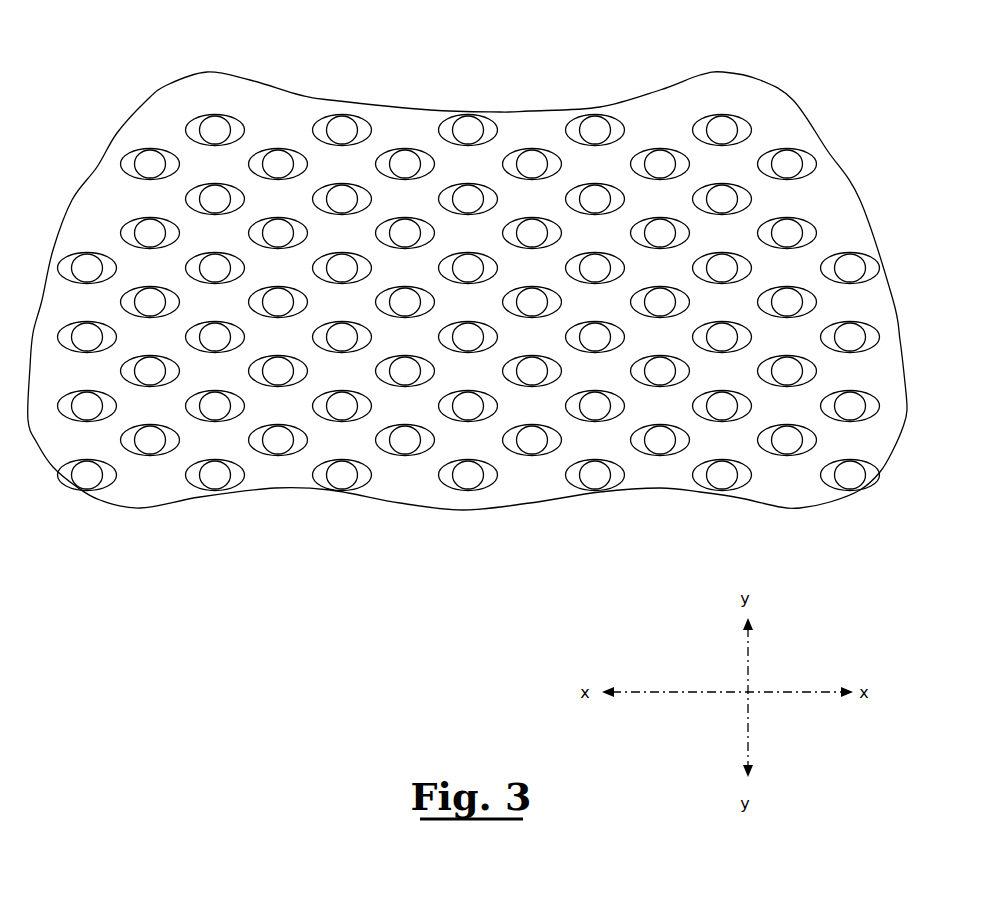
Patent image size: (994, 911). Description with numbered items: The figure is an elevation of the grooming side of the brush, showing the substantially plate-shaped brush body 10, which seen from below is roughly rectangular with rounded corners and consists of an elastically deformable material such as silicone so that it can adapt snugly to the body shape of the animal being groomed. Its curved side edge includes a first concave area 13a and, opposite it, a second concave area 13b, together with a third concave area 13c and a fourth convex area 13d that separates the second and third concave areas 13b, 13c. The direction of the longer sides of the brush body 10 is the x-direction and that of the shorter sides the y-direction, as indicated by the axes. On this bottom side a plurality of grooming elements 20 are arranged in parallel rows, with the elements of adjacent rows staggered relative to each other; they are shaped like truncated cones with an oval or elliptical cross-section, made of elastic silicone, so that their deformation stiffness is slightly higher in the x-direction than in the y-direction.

The brush body 10 is at (467, 305).
The first concave area 13a is at (520, 110).
The second concave area 13b is at (655, 490).
The third concave area 13c is at (275, 489).
The fourth convex area 13d is at (477, 510).
The grooming elements 20 is at (213, 128).